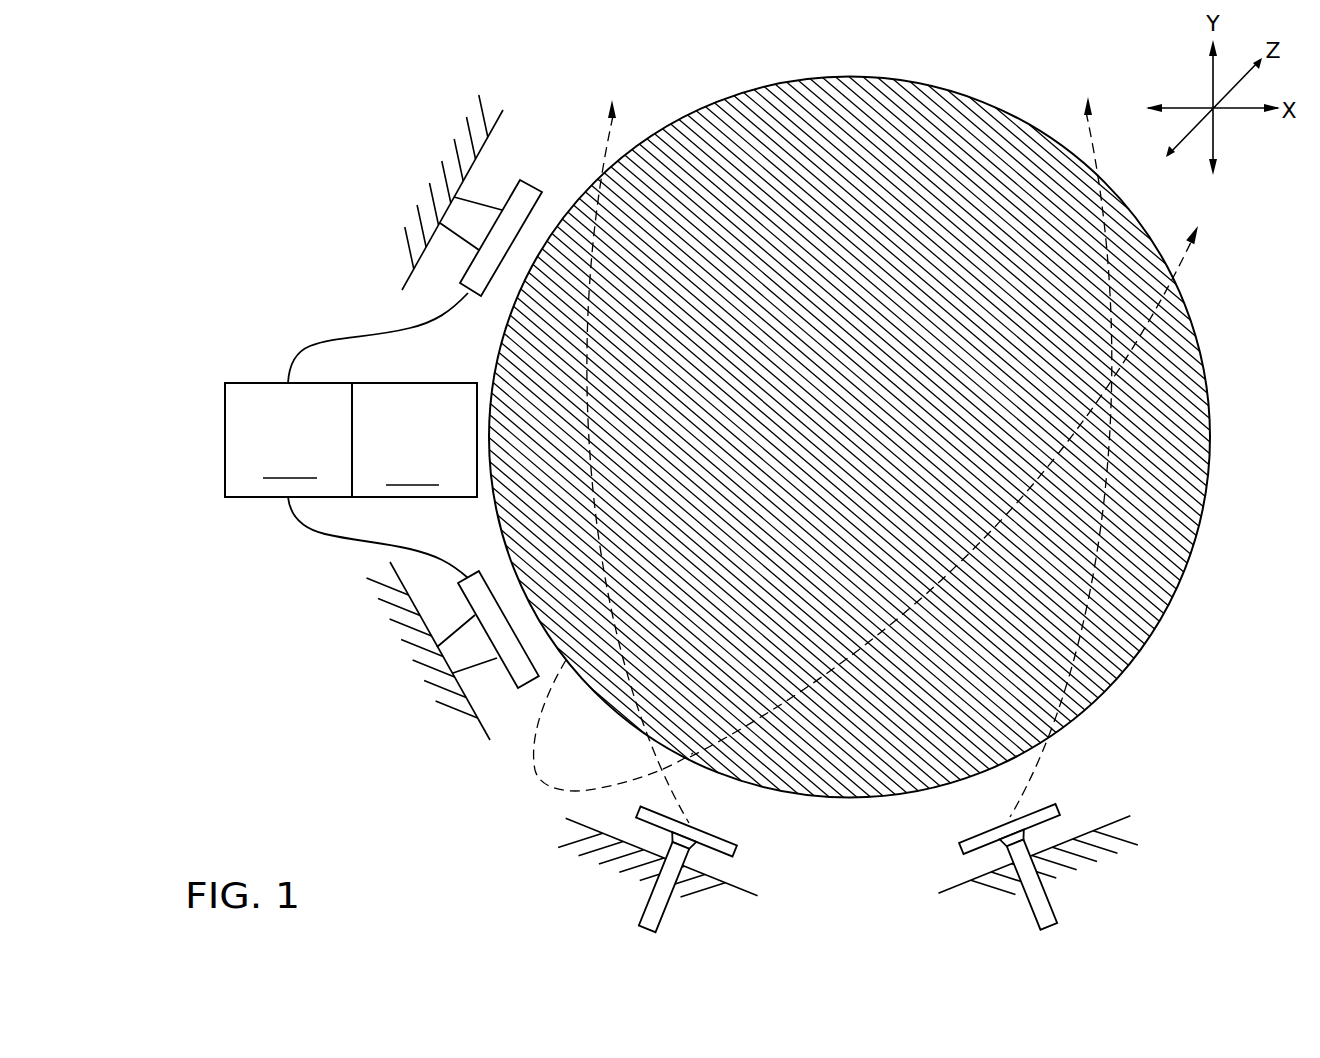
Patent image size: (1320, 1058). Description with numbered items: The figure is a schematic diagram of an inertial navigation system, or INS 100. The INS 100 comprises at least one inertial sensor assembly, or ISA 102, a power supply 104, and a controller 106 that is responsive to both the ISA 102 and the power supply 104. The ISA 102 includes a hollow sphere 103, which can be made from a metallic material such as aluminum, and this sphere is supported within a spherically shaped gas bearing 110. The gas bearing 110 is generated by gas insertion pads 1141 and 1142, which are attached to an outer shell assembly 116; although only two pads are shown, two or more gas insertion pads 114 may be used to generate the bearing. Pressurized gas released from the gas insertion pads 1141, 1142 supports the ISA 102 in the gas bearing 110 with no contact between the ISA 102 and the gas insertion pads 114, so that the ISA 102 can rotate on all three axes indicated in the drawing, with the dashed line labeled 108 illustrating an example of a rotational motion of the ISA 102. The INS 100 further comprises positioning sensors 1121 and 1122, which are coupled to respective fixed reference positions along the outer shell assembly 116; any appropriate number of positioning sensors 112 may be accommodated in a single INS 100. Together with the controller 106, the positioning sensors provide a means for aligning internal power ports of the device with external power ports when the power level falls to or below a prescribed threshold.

The inertial navigation system 100 is at (206, 186).
The inertial sensor assembly 102 is at (1212, 453).
The hollow sphere 103 is at (830, 90).
The power supply 104 is at (414, 440).
The controller 106 is at (288, 440).
The rotational motion 108 is at (1033, 492).
The gas bearing 110 is at (608, 102).
The positioning sensors 112 is at (565, 458).
The positioning sensor 1121 is at (522, 182).
The positioning sensor 1122 is at (533, 688).
The gas insertion pads 114 is at (869, 857).
The gas insertion pad 1141 is at (737, 851).
The gas insertion pad 1142 is at (1045, 806).
The outer shell assembly 116 is at (443, 170).